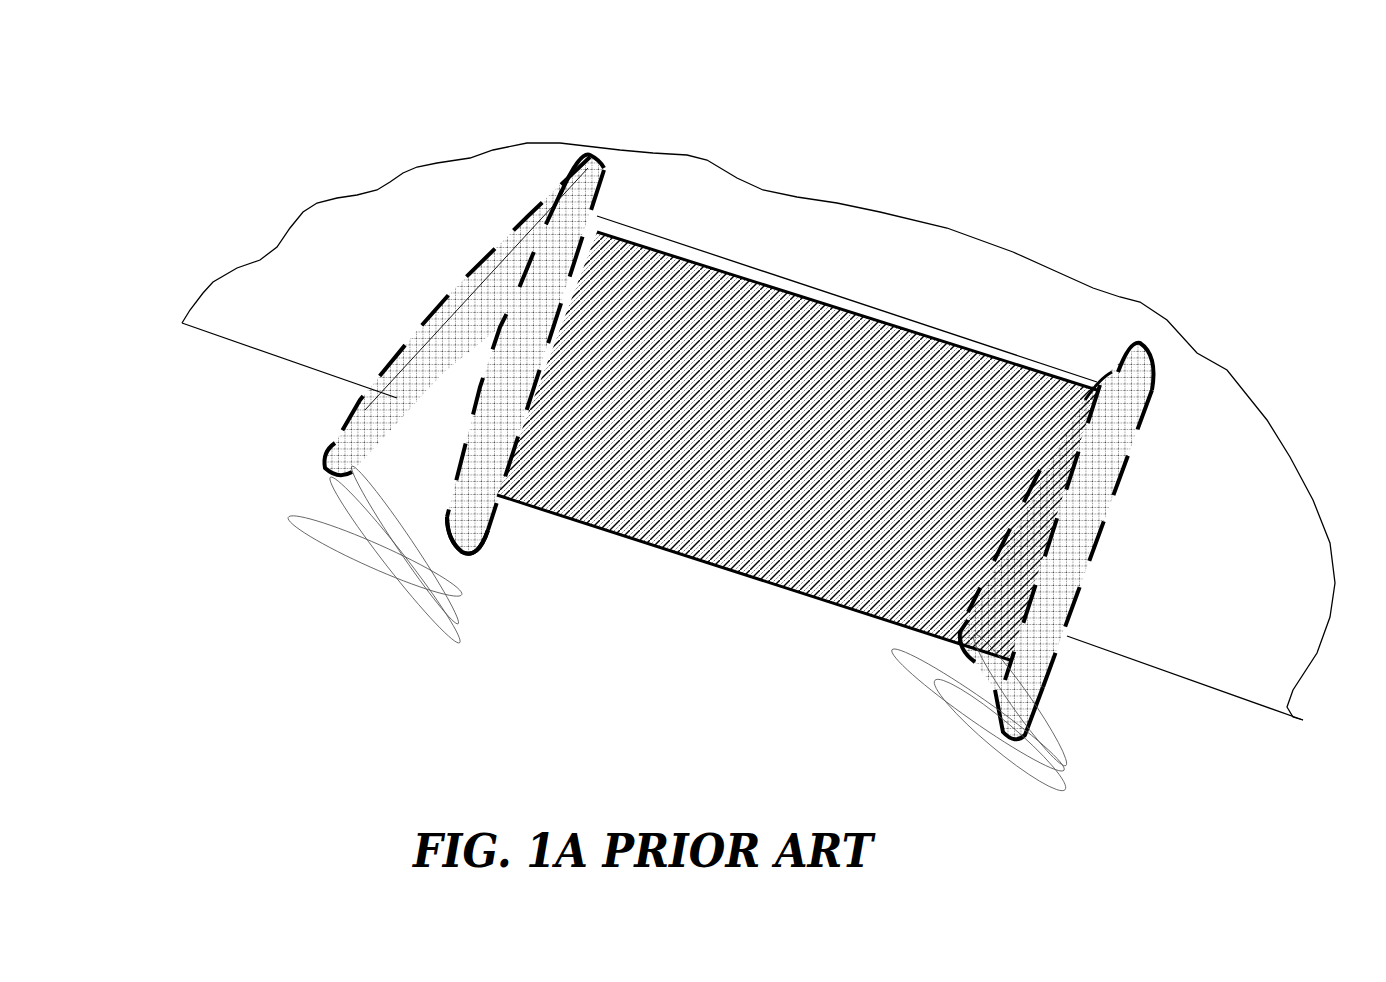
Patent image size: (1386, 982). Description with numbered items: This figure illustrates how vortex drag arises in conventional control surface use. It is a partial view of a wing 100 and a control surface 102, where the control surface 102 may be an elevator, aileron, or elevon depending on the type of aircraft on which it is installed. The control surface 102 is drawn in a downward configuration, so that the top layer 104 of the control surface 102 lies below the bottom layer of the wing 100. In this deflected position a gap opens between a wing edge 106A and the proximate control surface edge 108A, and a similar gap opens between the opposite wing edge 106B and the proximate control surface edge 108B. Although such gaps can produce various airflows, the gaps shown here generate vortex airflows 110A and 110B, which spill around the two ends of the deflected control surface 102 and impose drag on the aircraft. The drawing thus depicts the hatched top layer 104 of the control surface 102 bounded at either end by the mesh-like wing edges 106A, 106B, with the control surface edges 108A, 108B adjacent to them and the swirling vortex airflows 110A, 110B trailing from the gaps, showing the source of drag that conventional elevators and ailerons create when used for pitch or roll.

The wing 100 is at (260, 313).
The control surface 102 is at (780, 300).
The top layer 104 is at (313, 322).
The wing edge 106A is at (488, 250).
The wing edge 106B is at (1143, 340).
The control surface edge 108A is at (497, 507).
The control surface edge 108B is at (1100, 383).
The vortex airflow 110A is at (358, 550).
The vortex airflow 110B is at (980, 703).